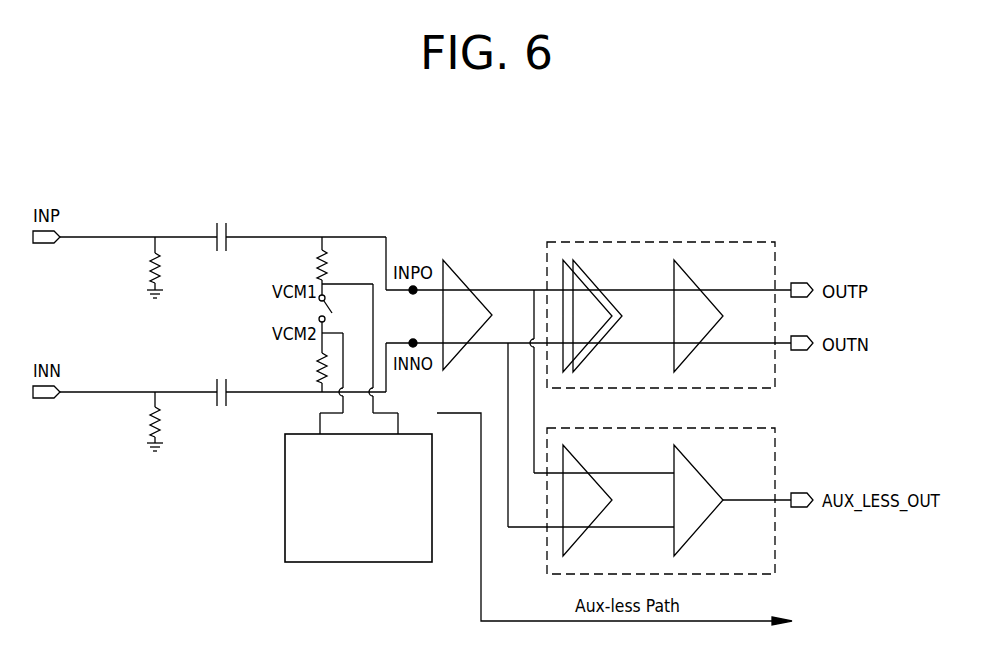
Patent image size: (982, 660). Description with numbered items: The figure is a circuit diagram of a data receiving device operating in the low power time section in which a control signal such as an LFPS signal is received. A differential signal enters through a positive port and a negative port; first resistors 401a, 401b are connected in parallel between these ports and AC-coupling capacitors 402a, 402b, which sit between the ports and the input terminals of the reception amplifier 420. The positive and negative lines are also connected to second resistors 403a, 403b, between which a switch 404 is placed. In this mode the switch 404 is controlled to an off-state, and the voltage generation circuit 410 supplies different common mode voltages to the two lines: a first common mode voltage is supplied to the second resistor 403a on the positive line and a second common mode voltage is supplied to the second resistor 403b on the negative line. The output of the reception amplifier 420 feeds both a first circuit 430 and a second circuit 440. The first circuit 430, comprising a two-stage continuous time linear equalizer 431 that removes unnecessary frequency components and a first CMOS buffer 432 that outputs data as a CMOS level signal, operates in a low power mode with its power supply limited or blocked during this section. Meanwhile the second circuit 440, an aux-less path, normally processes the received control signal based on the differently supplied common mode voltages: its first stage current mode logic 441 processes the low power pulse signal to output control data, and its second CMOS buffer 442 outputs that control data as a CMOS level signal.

The first resistor 401a is at (149, 268).
The first resistor 401b is at (149, 424).
The capacitor 402a is at (215, 226).
The capacitor 402b is at (214, 406).
The second resistor 403a is at (318, 270).
The second resistor 403b is at (318, 368).
The switch 404 is at (329, 307).
The voltage generation circuit 410 is at (358, 563).
The reception amplifier 420 is at (463, 280).
The first circuit 430 is at (689, 314).
The two-stage continuous time linear equalizer 431 is at (589, 279).
The first CMOS buffer 432 is at (694, 279).
The second circuit 440 is at (689, 499).
The first stage current mode logic 441 is at (581, 466).
The second CMOS buffer 442 is at (692, 466).